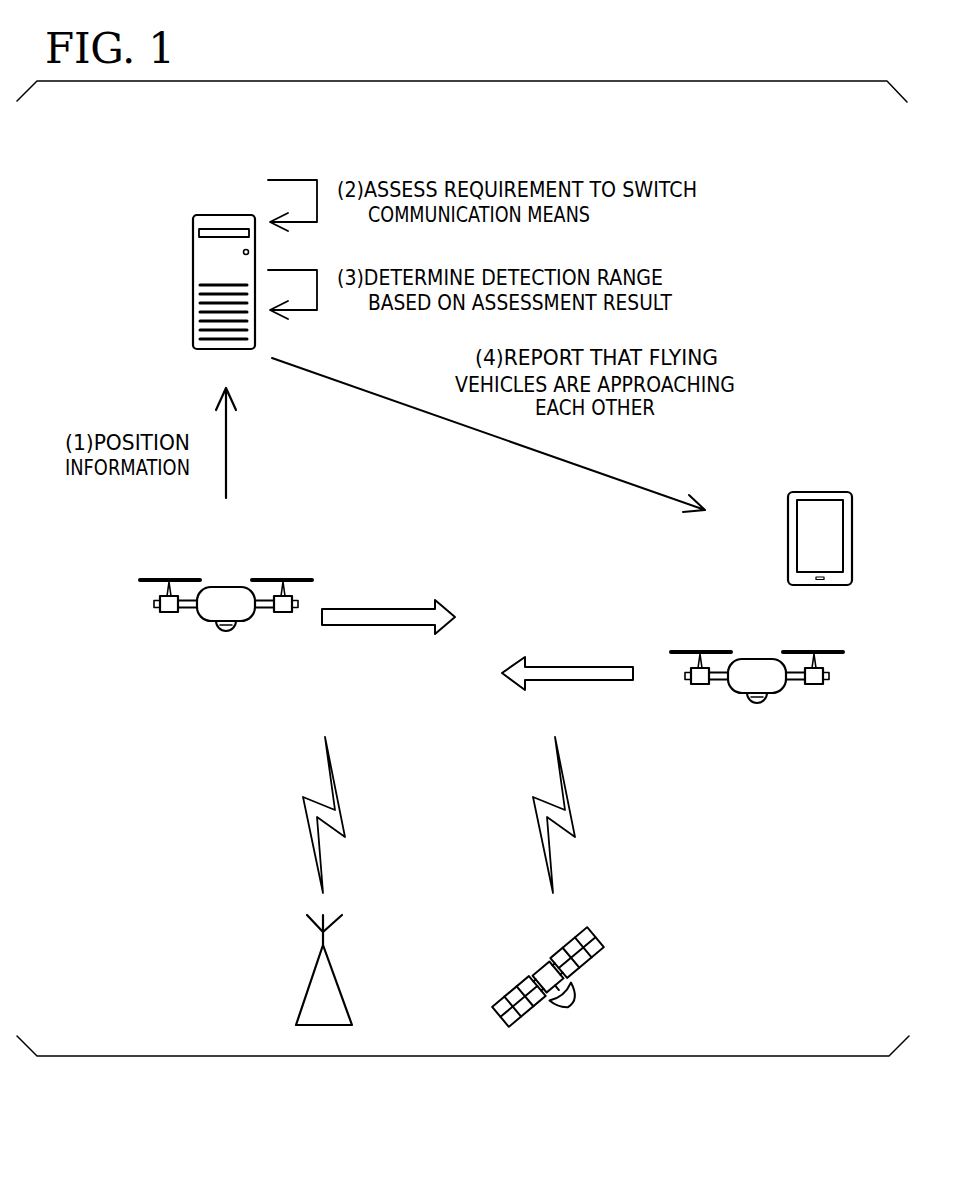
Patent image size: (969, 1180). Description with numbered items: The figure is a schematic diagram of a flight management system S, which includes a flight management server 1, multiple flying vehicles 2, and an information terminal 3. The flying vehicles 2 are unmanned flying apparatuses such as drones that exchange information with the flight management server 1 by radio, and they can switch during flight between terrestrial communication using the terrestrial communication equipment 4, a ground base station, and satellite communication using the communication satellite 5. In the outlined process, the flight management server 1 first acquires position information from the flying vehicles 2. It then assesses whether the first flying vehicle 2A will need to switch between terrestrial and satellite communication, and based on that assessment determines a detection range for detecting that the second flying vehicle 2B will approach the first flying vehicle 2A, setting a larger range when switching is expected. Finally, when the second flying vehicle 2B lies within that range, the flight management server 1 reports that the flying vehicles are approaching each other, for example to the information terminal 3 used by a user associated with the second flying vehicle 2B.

The flight management system S is at (124, 164).
The flight management server 1 is at (193, 250).
The flying vehicles 2 is at (491, 618).
The first flying vehicle 2A is at (215, 587).
The second flying vehicle 2B is at (746, 660).
The information terminal 3 is at (838, 494).
The terrestrial communication equipment 4 is at (313, 975).
The communication satellite 5 is at (545, 960).